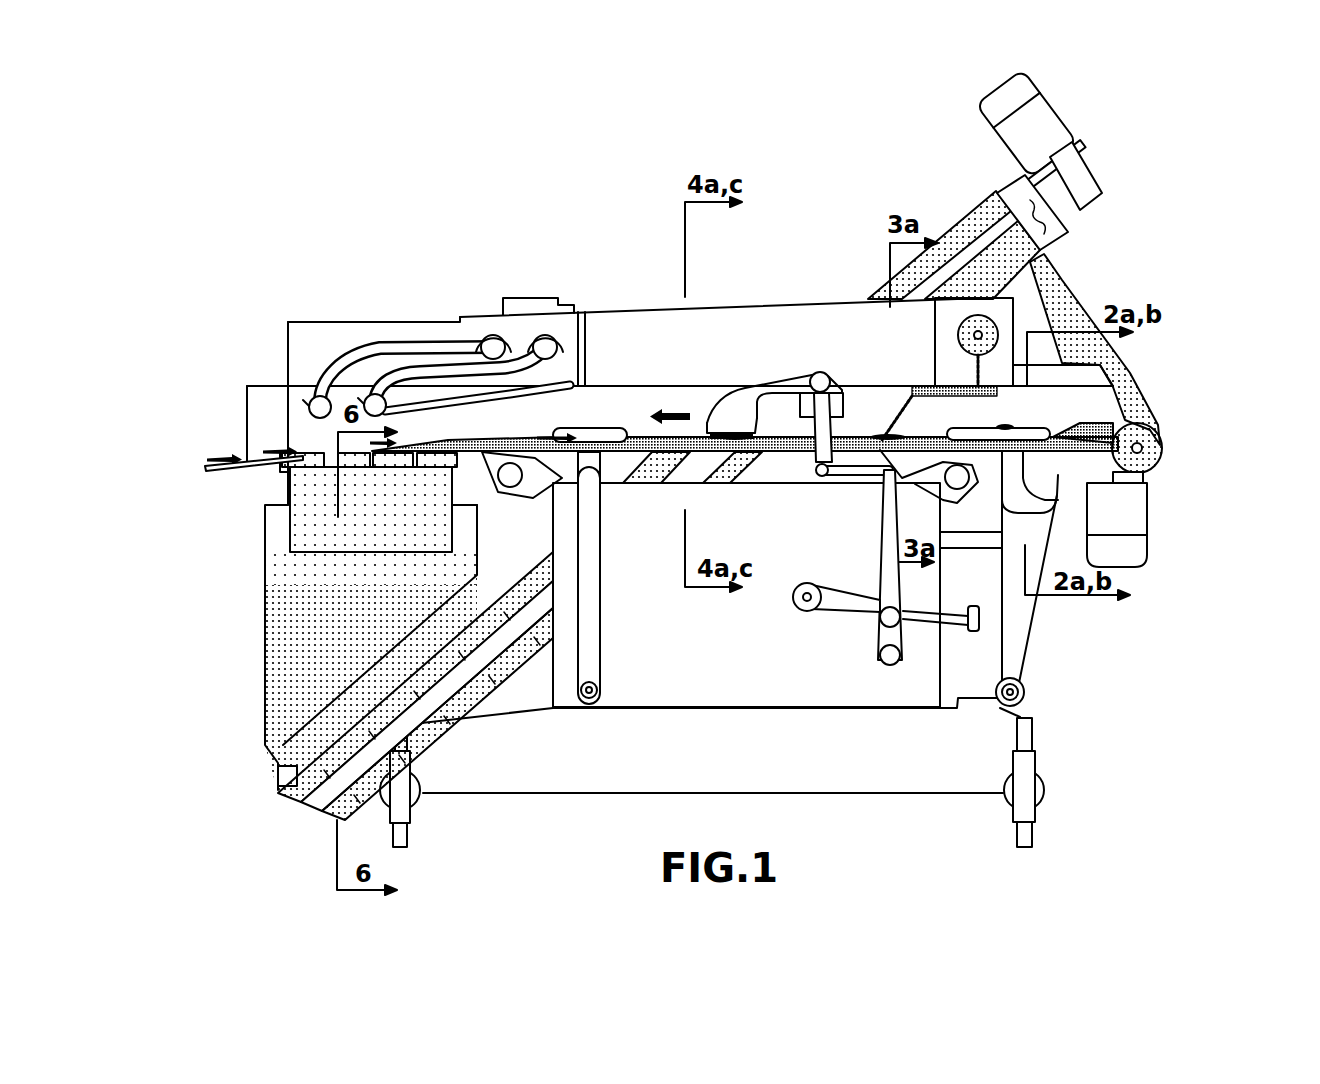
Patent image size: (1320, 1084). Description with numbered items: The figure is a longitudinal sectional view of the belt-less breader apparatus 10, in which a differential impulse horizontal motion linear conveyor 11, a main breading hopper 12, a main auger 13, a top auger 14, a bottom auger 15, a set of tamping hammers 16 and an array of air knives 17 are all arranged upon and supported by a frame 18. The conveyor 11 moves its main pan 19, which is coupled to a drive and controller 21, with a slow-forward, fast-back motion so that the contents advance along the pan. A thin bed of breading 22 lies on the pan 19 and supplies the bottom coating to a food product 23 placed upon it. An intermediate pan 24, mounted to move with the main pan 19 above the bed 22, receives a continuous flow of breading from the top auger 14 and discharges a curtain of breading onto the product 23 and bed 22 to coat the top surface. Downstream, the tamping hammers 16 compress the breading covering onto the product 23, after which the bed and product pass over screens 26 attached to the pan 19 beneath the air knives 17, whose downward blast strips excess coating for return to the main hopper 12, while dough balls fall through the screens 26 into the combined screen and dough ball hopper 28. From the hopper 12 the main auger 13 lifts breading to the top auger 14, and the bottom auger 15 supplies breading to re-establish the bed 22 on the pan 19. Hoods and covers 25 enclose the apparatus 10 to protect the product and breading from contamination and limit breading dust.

The breader apparatus 10 is at (460, 317).
The differential impulse horizontal motion linear conveyor 11 is at (243, 460).
The main breading hopper 12 is at (282, 648).
The main auger 13 is at (297, 767).
The top auger 14 is at (987, 342).
The bottom auger 15 is at (1150, 448).
The tamping hammers 16 is at (807, 377).
The air knives 17 is at (360, 347).
The frame 18 is at (993, 738).
The main pan 19 is at (1098, 413).
The drive and controller 21 is at (900, 653).
The bed of breading 22 is at (650, 437).
The food product 23 is at (282, 450).
The intermediate pan 24 is at (920, 390).
The hoods and covers 25 is at (638, 312).
The screens 26 is at (348, 448).
The screen and dough ball hopper 28 is at (322, 502).